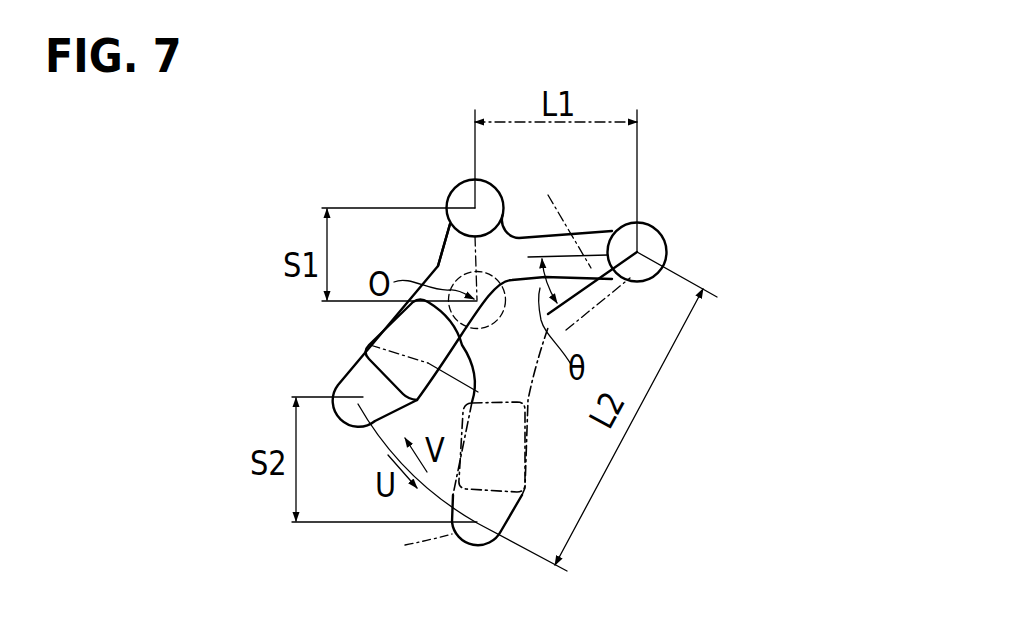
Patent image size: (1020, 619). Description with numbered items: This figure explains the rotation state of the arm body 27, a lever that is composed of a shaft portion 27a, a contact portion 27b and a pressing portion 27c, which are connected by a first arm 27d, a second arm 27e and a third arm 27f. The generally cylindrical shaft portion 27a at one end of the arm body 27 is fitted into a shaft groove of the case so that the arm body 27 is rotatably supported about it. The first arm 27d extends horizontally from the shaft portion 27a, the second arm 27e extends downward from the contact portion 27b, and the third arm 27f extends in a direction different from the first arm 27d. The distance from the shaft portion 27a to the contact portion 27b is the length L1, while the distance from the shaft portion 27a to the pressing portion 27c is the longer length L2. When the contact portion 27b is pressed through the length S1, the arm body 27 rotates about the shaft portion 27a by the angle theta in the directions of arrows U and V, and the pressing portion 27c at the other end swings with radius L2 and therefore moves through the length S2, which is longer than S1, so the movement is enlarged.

The arm body 27 is at (594, 232).
The shaft portion 27a is at (655, 248).
The contact portion 27b is at (462, 199).
The pressing portion 27c is at (353, 413).
The first arm 27d is at (535, 247).
The second arm 27e is at (456, 240).
The third arm 27f is at (382, 334).